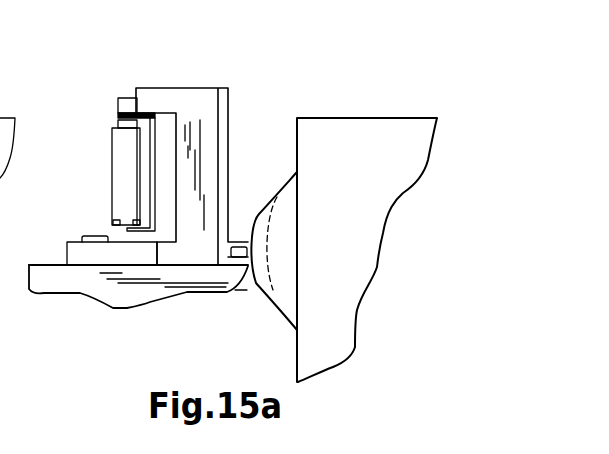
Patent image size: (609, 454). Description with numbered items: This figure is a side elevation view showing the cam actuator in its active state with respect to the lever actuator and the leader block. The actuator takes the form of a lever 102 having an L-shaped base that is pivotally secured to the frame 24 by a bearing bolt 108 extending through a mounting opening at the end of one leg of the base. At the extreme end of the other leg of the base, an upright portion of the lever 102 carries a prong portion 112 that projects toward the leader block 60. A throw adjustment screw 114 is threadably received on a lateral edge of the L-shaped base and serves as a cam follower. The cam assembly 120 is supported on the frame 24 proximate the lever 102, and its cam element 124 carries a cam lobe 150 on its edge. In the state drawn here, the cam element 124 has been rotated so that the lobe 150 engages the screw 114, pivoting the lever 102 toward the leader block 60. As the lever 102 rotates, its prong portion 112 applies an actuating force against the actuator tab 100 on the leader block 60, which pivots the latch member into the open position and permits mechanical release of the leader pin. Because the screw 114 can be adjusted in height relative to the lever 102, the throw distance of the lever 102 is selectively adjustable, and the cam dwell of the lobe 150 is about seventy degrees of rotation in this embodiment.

The frame 24 is at (82, 292).
The leader block 60 is at (107, 190).
The actuator tab 100 is at (117, 107).
The lever 102 is at (229, 106).
The bearing bolt 108 is at (91, 236).
The prong portion 112 is at (157, 97).
The throw adjustment screw 114 is at (253, 238).
The cam assembly 120 is at (367, 185).
The cam element 124 is at (281, 183).
The cam lobe 150 is at (273, 292).